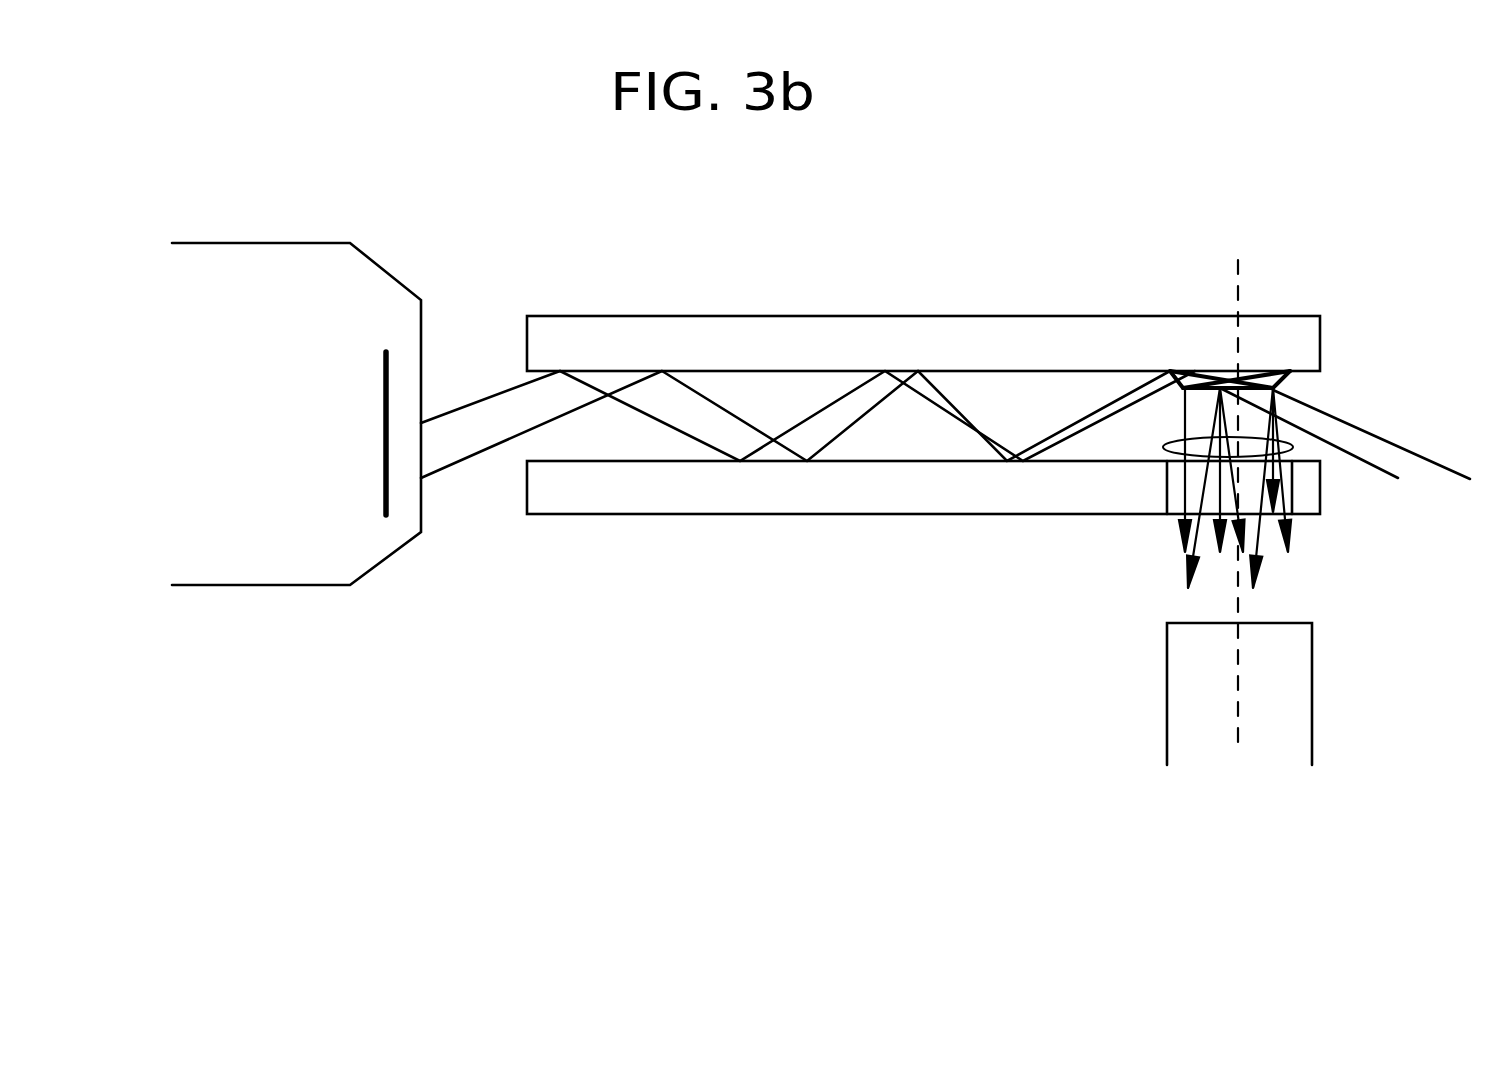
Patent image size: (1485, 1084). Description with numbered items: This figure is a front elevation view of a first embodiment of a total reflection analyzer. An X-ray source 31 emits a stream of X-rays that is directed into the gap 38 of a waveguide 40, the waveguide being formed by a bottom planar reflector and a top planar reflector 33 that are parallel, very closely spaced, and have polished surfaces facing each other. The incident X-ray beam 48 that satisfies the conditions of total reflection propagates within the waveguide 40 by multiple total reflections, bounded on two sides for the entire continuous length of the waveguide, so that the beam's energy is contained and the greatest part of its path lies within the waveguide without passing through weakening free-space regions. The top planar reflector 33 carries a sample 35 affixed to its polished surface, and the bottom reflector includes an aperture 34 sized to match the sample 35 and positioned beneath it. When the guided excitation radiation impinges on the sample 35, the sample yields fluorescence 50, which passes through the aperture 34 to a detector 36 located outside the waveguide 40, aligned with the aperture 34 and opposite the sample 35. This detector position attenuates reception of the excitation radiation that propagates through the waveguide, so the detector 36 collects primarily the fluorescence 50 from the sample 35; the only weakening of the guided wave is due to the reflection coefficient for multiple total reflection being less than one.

The X-ray source 31 is at (250, 587).
The top planar reflector 33 is at (1320, 315).
The aperture 34 is at (1297, 490).
The sample 35 is at (1292, 382).
The detector 36 is at (1313, 695).
The gap 38 is at (525, 412).
The waveguide 40 is at (1010, 293).
The incident X-ray beam 48 is at (766, 410).
The fluorescence 50 is at (1300, 450).